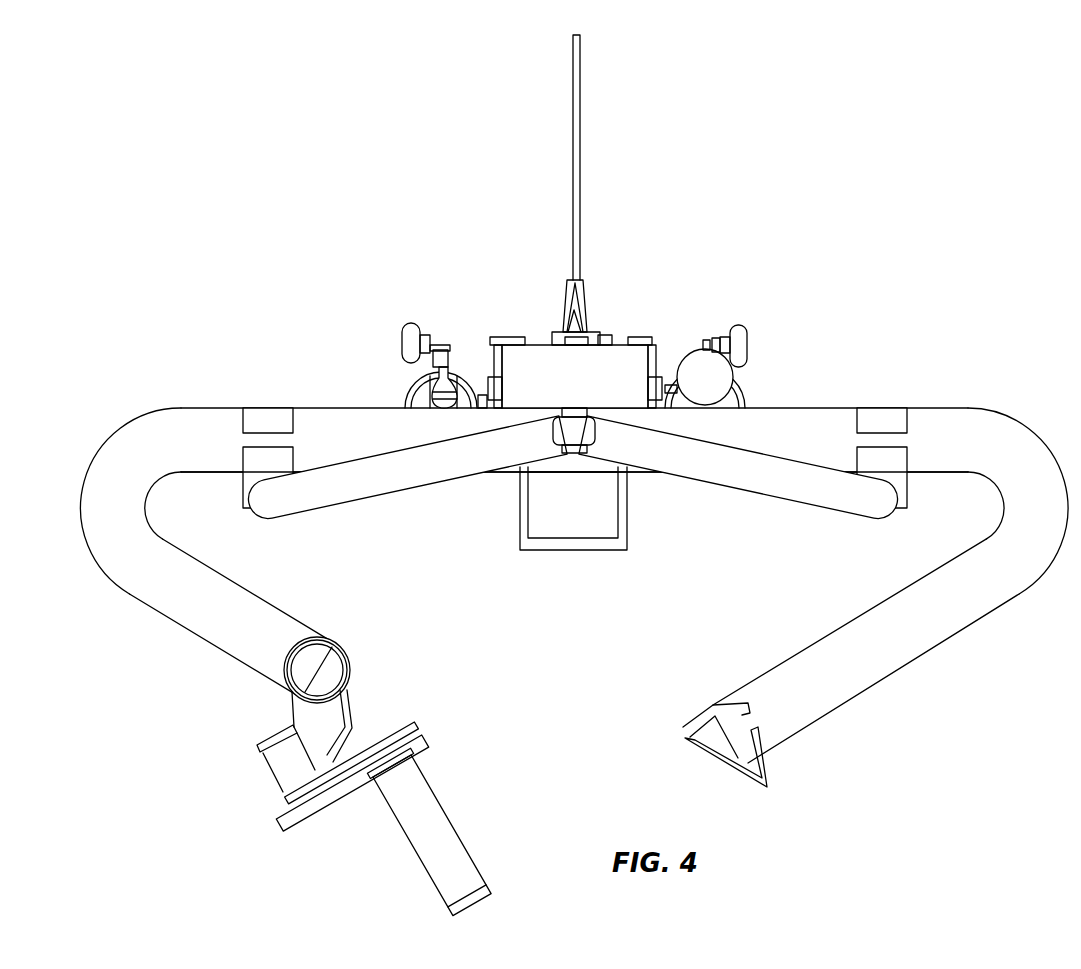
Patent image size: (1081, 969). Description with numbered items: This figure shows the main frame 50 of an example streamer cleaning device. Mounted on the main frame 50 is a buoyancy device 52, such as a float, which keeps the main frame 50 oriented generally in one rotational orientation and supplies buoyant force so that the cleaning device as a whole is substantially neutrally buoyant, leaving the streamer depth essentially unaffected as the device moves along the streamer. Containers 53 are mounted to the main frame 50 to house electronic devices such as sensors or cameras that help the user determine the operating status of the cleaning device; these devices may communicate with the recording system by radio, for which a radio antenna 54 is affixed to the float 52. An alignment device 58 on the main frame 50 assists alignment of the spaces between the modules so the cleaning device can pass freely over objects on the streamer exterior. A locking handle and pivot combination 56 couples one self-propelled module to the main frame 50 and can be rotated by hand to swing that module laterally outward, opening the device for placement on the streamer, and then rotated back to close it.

The main frame 50 is at (858, 680).
The buoyancy device 52 is at (640, 337).
The containers 53 is at (408, 382).
The radio antenna 54 is at (580, 107).
The locking handle and pivot combination 56 is at (458, 860).
The alignment device 58 is at (786, 506).